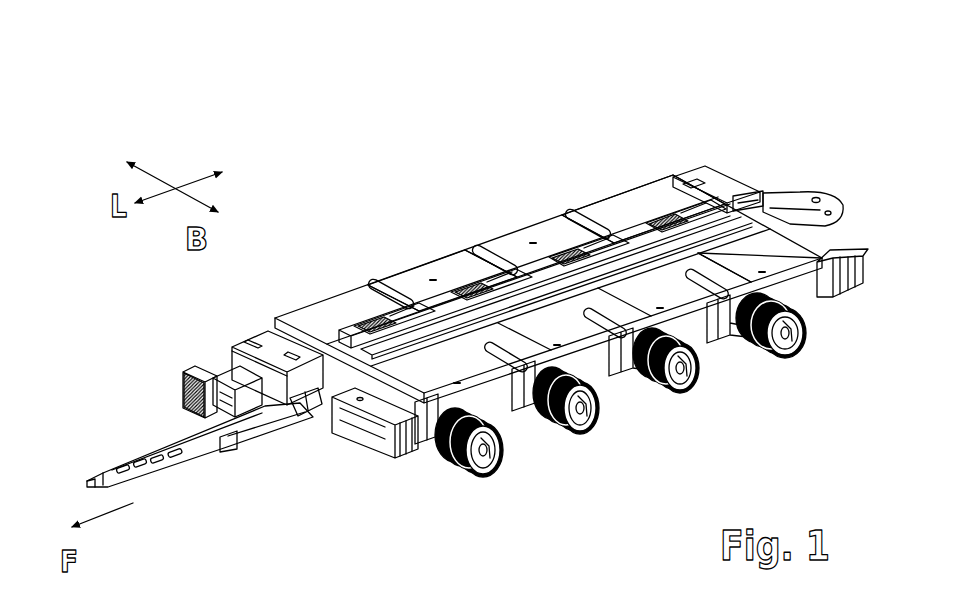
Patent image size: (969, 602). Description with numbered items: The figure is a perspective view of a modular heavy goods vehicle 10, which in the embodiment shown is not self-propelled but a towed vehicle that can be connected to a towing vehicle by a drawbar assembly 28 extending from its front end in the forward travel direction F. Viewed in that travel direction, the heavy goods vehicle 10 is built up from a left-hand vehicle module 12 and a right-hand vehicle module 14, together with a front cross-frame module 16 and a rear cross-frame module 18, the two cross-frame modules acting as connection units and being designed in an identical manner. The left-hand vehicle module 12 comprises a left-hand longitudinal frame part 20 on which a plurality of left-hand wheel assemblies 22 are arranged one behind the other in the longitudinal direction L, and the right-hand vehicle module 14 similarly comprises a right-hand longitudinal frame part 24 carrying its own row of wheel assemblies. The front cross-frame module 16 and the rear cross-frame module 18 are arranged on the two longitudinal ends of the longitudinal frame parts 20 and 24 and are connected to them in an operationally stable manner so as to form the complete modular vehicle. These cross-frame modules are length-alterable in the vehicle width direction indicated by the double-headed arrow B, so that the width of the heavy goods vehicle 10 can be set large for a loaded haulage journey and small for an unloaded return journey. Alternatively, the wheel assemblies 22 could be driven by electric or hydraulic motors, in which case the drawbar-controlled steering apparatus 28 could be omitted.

The heavy goods vehicle 10 is at (270, 100).
The left-hand vehicle module 12 is at (779, 267).
The right-hand vehicle module 14 is at (608, 208).
The front cross-frame module 16 is at (367, 430).
The rear cross-frame module 18 is at (735, 198).
The left-hand longitudinal frame part 20 is at (673, 303).
The left-hand wheel assemblies 22 is at (583, 442).
The right-hand longitudinal frame part 24 is at (455, 272).
The drawbar assembly 28 is at (177, 460).